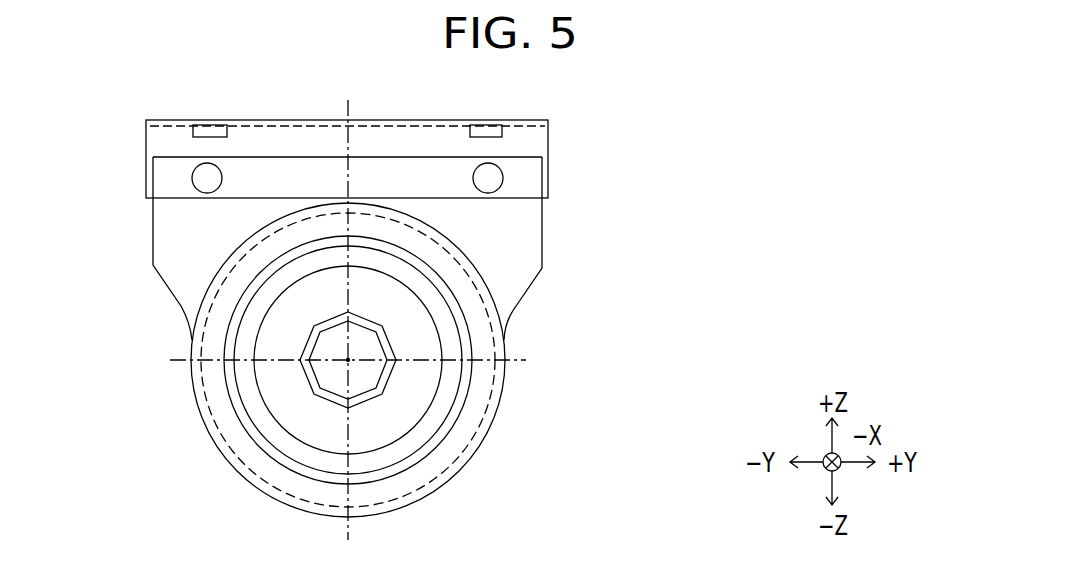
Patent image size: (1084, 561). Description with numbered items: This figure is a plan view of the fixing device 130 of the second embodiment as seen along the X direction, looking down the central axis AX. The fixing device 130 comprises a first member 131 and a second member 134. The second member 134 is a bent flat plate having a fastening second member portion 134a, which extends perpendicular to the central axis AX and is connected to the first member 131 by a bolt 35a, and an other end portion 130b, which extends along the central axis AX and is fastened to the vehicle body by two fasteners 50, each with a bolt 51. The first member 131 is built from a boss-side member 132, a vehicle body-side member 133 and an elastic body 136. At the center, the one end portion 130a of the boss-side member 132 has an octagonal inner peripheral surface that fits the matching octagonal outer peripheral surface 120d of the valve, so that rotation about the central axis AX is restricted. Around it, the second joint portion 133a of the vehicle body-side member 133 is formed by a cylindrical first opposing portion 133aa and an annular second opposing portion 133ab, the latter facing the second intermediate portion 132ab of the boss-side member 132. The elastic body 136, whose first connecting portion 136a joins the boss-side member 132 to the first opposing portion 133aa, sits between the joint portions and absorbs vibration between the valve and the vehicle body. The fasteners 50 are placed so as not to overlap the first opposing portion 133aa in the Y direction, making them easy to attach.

The fixing device 130 is at (767, 123).
The first member 131 is at (737, 274).
The boss-side member 132 is at (632, 380).
The second intermediate portion 132ab is at (503, 388).
The one end portion 130a is at (410, 412).
The vehicle body-side member 133 is at (652, 258).
The second joint portion 133a is at (648, 275).
The second opposing portion 133ab is at (515, 285).
The first opposing portion 133aa is at (467, 332).
The second member 134 is at (645, 115).
The fastening second member portion 134a is at (537, 145).
The other end portion 130b is at (548, 122).
The bolt 35a is at (204, 181).
The bolt 51 is at (213, 130).
The fastener 50 is at (487, 130).
The elastic body 136 is at (453, 352).
The first connecting portion 136a is at (348, 360).
The outer peripheral surface 120d is at (332, 322).
The central axis AX is at (348, 360).